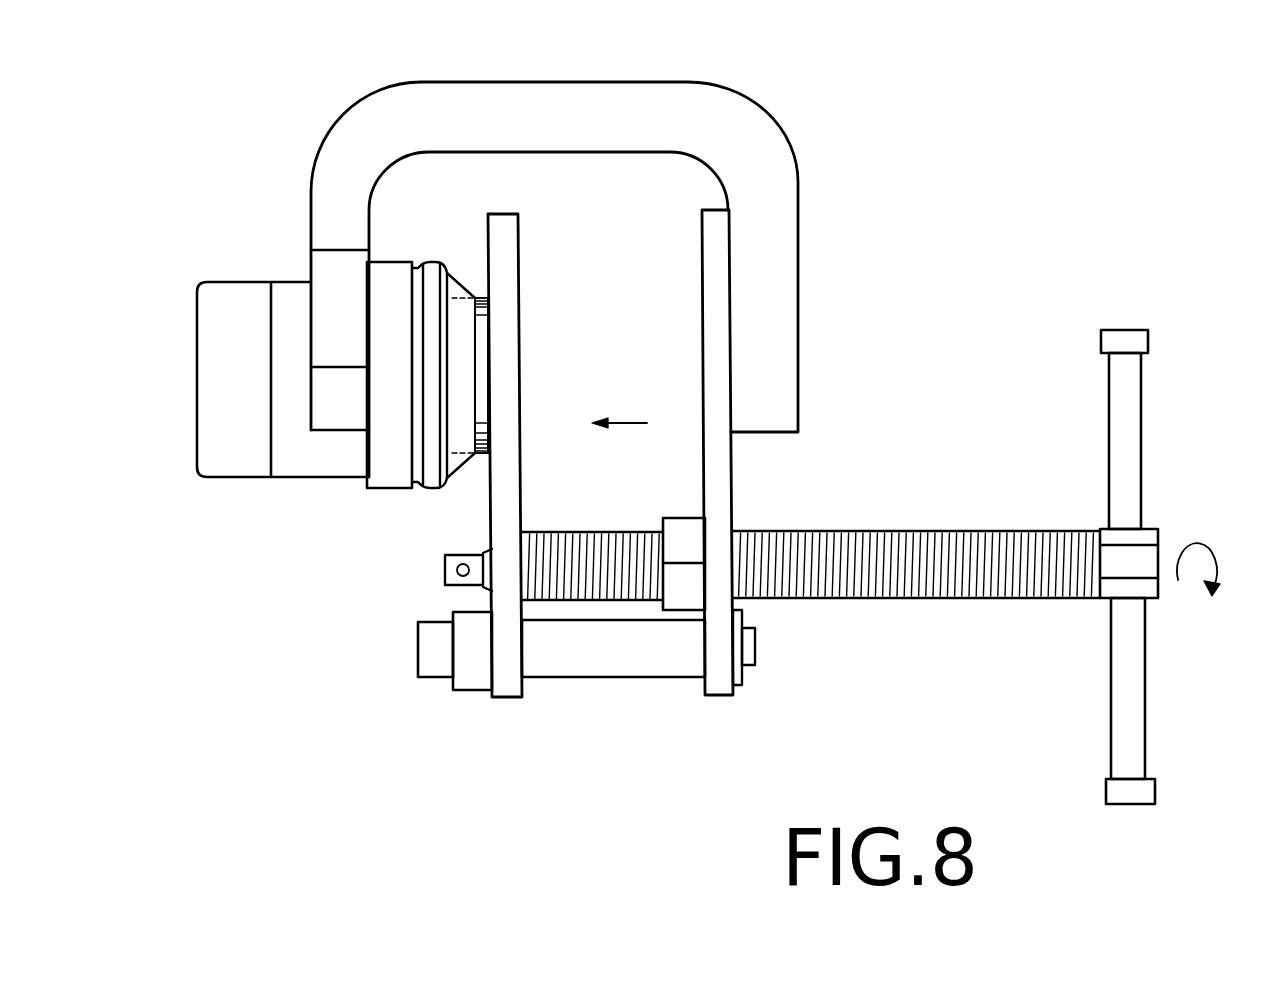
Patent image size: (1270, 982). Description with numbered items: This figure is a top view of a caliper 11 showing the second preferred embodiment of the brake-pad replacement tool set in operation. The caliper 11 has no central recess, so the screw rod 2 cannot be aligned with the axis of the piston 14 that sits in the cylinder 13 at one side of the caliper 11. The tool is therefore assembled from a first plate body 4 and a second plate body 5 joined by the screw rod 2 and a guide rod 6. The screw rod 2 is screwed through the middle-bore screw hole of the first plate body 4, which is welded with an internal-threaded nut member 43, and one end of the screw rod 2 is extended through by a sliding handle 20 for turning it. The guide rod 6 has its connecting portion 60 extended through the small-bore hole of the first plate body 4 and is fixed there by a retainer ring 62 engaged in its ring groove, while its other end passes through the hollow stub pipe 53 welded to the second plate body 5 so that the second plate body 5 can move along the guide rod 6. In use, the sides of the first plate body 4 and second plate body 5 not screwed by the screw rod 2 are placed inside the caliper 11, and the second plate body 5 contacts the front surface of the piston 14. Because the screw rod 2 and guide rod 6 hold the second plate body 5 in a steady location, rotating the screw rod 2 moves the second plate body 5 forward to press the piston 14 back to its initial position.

The screw rod 2 is at (947, 530).
The first plate body 4 is at (716, 276).
The second plate body 5 is at (498, 252).
The guide rod 6 is at (572, 662).
The caliper 11 is at (624, 95).
The cylinder 13 is at (230, 310).
The piston 14 is at (477, 300).
The sliding handle 20 is at (1133, 414).
The internal-threaded nut member 43 is at (690, 533).
The hollow stub pipe 53 is at (465, 672).
The connecting portion 60 is at (755, 643).
The retainer ring 62 is at (745, 657).